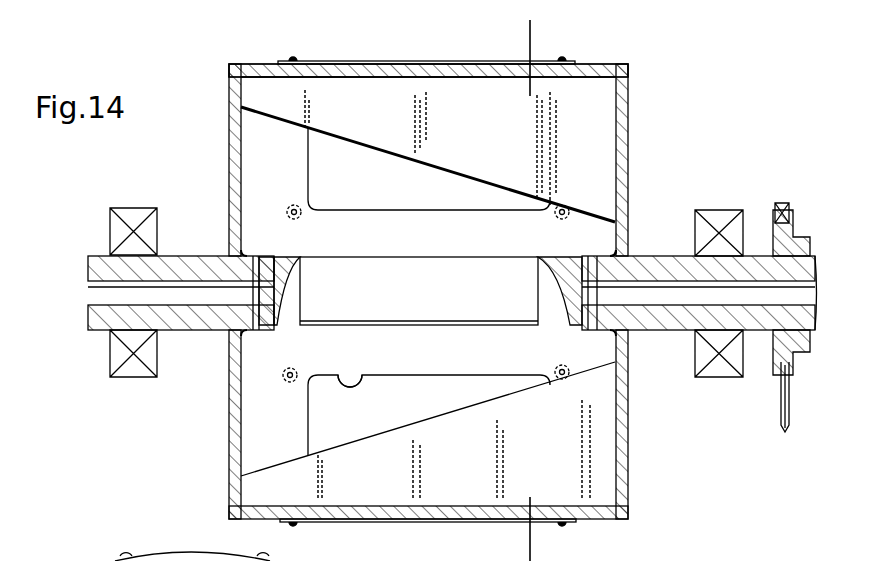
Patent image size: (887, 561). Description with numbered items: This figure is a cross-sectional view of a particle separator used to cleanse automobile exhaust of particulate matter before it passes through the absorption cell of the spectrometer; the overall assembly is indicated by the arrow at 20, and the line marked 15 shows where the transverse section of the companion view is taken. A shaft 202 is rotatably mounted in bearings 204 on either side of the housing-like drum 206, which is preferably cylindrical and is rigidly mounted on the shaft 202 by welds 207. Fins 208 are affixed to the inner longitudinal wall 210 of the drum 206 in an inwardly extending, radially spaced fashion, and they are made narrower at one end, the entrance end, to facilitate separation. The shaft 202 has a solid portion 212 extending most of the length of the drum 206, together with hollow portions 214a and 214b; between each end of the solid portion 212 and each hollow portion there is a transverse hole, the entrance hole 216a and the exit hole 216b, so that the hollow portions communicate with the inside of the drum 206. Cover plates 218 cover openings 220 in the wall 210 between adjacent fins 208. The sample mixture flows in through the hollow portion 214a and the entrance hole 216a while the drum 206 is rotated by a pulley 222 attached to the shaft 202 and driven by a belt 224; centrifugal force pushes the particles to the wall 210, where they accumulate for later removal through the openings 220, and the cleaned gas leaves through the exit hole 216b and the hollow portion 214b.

The brush assembly 20 is at (190, 438).
The section line 15 is at (528, 36).
The shaft 202 is at (667, 256).
The bearings 204 is at (138, 212).
The drum 206 is at (260, 73).
The welds 207 is at (630, 256).
The fins 208 is at (502, 133).
The inner longitudinal wall 210 is at (363, 78).
The solid portion 212 is at (464, 293).
The hollow portion 214a is at (95, 300).
The hollow portion 214b is at (802, 298).
The entrance hole 216a is at (262, 330).
The exit hole 216b is at (600, 326).
The cover plates 218 is at (405, 48).
The openings 220 is at (348, 378).
The pulley 222 is at (806, 238).
The belt 224 is at (791, 406).